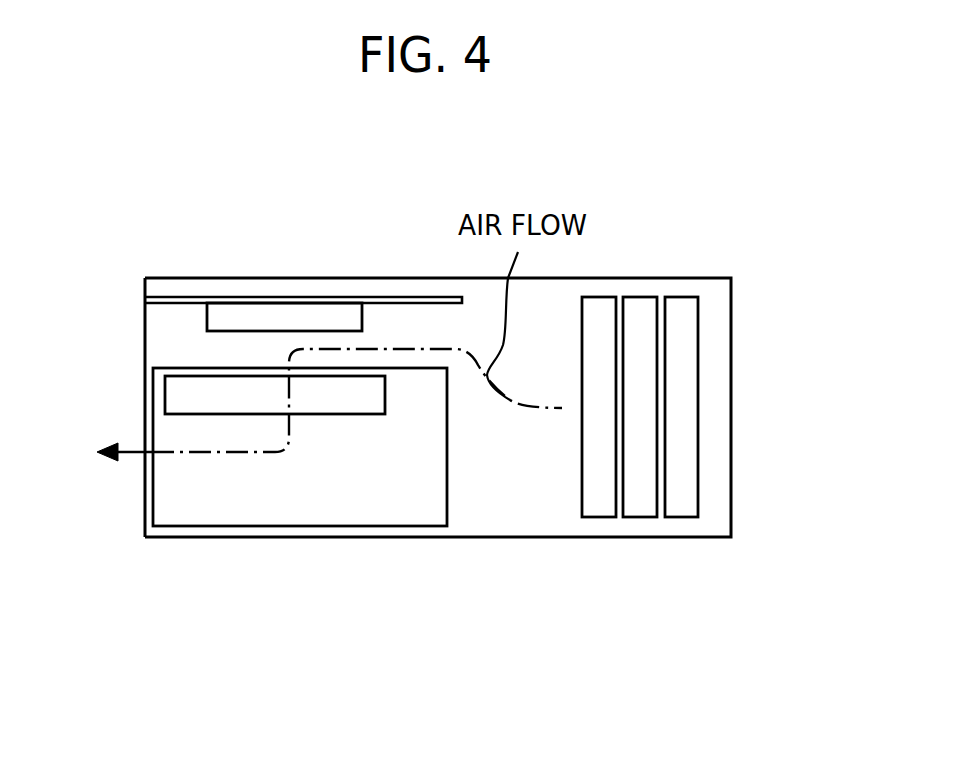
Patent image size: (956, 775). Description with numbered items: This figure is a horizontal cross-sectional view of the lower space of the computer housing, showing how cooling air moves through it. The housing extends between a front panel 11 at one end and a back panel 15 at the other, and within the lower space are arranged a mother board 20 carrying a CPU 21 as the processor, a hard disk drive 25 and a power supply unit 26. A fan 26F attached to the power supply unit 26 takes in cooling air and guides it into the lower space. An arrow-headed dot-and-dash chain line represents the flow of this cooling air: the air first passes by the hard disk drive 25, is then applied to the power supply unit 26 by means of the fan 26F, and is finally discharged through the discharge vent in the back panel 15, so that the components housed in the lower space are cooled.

The front panel 11 is at (727, 383).
The back panel 15 is at (145, 507).
The mother board 20 is at (190, 303).
The CPU 21 is at (280, 317).
The hard disk drive 25 is at (643, 500).
The power supply unit 26 is at (405, 487).
The fan 26F is at (335, 398).